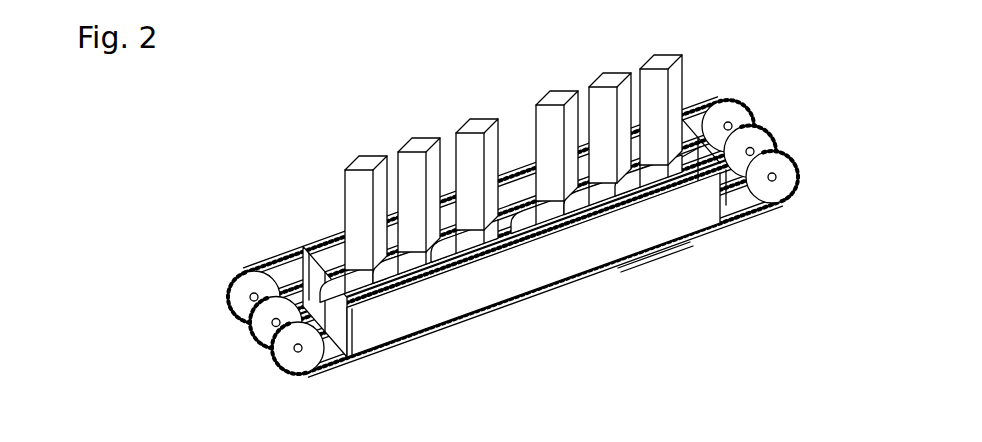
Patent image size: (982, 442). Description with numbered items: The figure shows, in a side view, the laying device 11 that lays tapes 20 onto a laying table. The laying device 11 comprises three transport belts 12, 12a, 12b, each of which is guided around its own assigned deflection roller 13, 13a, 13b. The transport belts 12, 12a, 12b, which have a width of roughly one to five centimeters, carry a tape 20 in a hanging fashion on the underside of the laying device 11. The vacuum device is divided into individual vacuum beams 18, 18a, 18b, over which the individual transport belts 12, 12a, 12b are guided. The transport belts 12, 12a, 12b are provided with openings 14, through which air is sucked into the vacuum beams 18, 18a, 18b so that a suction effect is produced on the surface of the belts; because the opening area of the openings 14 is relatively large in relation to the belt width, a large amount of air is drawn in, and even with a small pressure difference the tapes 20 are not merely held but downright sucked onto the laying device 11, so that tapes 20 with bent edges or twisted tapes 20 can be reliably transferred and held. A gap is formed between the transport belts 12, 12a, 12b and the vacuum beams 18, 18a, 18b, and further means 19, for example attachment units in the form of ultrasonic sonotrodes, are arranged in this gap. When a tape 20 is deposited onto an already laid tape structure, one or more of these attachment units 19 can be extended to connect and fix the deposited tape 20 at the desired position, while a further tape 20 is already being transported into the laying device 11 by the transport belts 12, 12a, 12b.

The laying device 11 is at (427, 219).
The transport belt 12 is at (758, 207).
The transport belt 12a is at (710, 141).
The transport belt 12b is at (267, 262).
The deflection roller 13 is at (288, 362).
The deflection roller 13a is at (262, 337).
The deflection roller 13b is at (242, 307).
The openings 14 is at (337, 230).
The vacuum beam 18 is at (438, 316).
The vacuum beam 18a is at (688, 160).
The vacuum beam 18b is at (310, 258).
The further means 19 is at (466, 117).
The tape 20 is at (640, 262).